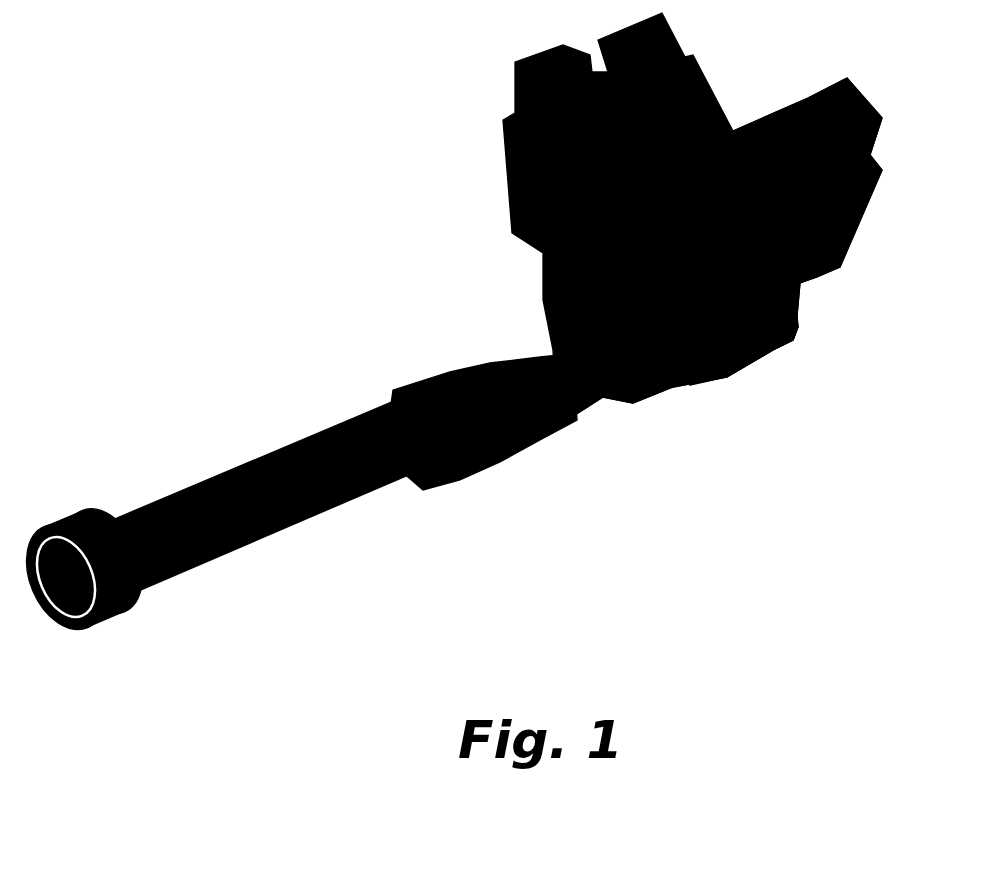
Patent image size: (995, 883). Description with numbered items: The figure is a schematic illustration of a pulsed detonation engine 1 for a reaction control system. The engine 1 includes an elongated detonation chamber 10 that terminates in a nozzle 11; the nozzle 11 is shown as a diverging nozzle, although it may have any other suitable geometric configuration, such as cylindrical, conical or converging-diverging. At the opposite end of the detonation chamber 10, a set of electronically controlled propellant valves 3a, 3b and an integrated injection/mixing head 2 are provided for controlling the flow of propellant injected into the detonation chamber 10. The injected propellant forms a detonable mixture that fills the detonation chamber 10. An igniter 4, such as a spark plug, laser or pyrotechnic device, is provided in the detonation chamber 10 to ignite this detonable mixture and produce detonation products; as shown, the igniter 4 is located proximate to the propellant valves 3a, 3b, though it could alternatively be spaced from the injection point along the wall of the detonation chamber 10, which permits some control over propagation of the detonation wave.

The pulsed detonation engine 1 is at (130, 53).
The integrated injection/mixing head 2 is at (682, 400).
The propellant valve 3a is at (743, 380).
The propellant valve 3b is at (507, 160).
The igniter 4 is at (473, 352).
The detonation chamber 10 is at (266, 435).
The nozzle 11 is at (45, 635).